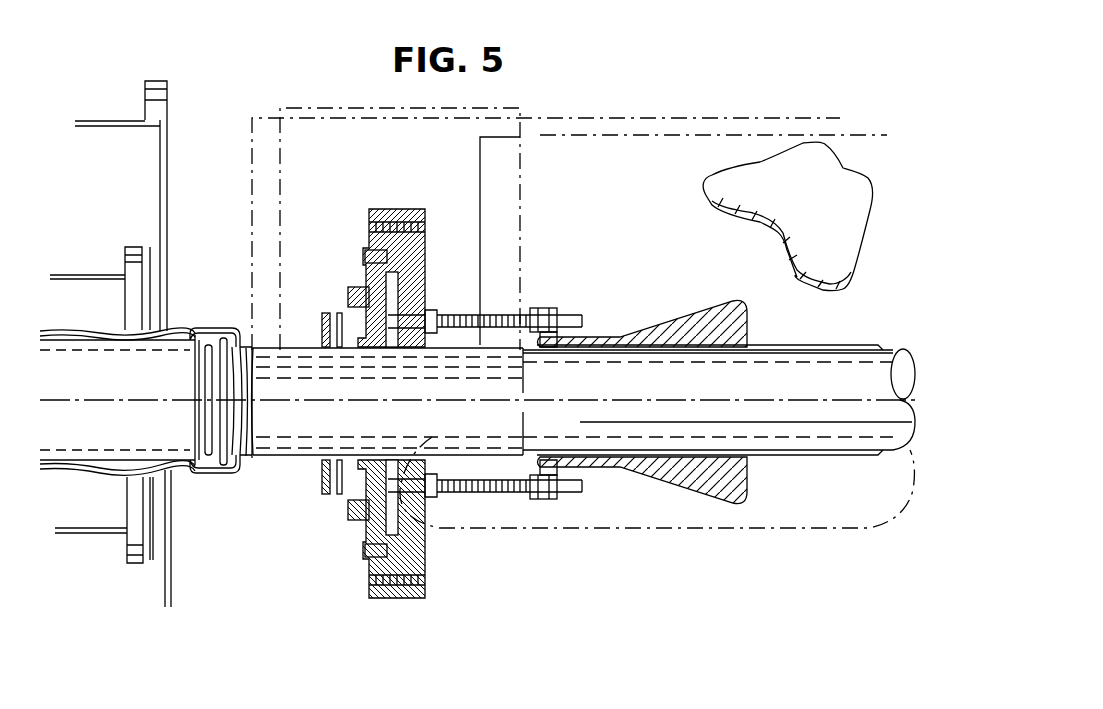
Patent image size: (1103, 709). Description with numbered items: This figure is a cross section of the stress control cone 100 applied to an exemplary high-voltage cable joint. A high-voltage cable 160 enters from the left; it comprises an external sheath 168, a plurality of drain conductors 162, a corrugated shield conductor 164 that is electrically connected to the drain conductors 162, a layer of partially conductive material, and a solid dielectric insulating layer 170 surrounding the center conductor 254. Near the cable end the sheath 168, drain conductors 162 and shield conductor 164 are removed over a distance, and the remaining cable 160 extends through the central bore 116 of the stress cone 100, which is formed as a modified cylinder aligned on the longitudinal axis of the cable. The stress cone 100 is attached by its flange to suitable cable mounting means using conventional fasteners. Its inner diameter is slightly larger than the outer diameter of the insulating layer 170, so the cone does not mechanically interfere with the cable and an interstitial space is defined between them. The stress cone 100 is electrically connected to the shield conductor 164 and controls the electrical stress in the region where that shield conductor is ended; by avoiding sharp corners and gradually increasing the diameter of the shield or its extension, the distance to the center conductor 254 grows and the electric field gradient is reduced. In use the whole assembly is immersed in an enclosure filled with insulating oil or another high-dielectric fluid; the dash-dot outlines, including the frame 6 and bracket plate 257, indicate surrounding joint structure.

The frame 6 is at (647, 528).
The stress control cone 100 is at (715, 317).
The central bore 116 is at (740, 335).
The cable 160 is at (136, 394).
The drain conductors 162 is at (207, 327).
The shield conductor 164 is at (250, 350).
The external sheath 168 is at (168, 443).
The solid dielectric insulating layer 170 is at (527, 413).
The center conductor 254 is at (527, 393).
The bracket plate 257 is at (868, 215).